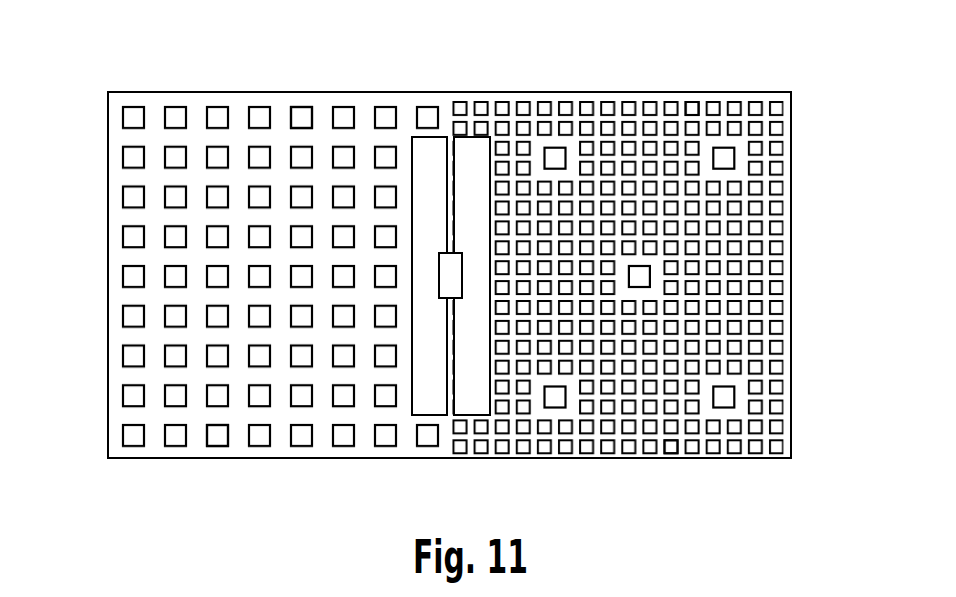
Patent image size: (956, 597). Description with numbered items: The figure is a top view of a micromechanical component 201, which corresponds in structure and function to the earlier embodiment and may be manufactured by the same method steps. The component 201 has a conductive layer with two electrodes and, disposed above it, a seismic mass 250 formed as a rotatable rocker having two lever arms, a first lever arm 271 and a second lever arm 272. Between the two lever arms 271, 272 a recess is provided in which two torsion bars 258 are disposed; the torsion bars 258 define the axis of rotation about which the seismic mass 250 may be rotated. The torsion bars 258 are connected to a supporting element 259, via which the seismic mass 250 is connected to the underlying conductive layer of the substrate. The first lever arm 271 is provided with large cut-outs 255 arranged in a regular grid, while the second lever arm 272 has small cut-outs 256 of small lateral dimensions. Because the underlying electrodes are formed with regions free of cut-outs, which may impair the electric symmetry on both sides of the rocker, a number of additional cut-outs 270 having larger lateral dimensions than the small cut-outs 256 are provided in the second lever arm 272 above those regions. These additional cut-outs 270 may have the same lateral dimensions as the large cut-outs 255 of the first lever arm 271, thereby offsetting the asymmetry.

The micromechanical component 201 is at (140, 51).
The seismic mass 250 is at (406, 440).
The large cut-outs 255 is at (295, 110).
The small cut-outs 256 is at (688, 105).
The torsion bars 258 is at (450, 150).
The supporting element 259 is at (448, 278).
The additional cut-outs 270 is at (723, 155).
The first lever arm 271 is at (240, 110).
The second lever arm 272 is at (620, 105).